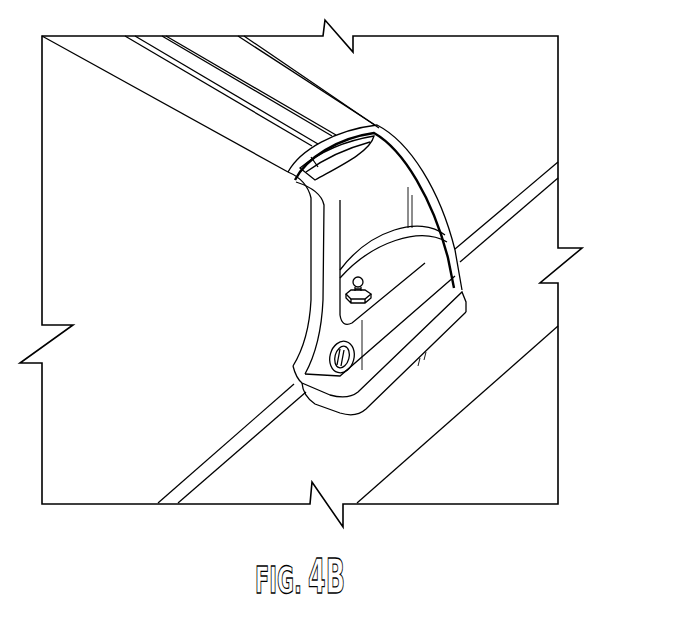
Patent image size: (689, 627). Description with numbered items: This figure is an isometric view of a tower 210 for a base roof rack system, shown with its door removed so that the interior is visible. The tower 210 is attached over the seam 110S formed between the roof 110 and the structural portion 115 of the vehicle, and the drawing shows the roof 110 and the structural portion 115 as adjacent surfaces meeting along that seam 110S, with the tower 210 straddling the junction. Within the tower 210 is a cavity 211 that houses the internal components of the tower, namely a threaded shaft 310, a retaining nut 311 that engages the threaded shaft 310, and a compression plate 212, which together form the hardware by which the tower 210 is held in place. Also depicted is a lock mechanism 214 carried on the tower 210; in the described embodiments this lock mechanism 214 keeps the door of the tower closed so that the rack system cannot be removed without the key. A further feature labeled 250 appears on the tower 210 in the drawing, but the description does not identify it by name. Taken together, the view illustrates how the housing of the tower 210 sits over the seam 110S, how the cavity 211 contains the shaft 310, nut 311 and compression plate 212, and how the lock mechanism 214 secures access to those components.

The roof 110 is at (167, 251).
The seam 110S is at (533, 191).
The structural portion 115 is at (488, 357).
The tower 210 is at (436, 191).
The cavity 211 is at (383, 218).
The compression plate 212 is at (397, 266).
The lock mechanism 214 is at (330, 360).
The trim strip 250 is at (338, 103).
The threaded shaft 310 is at (357, 277).
The retaining nut 311 is at (347, 297).